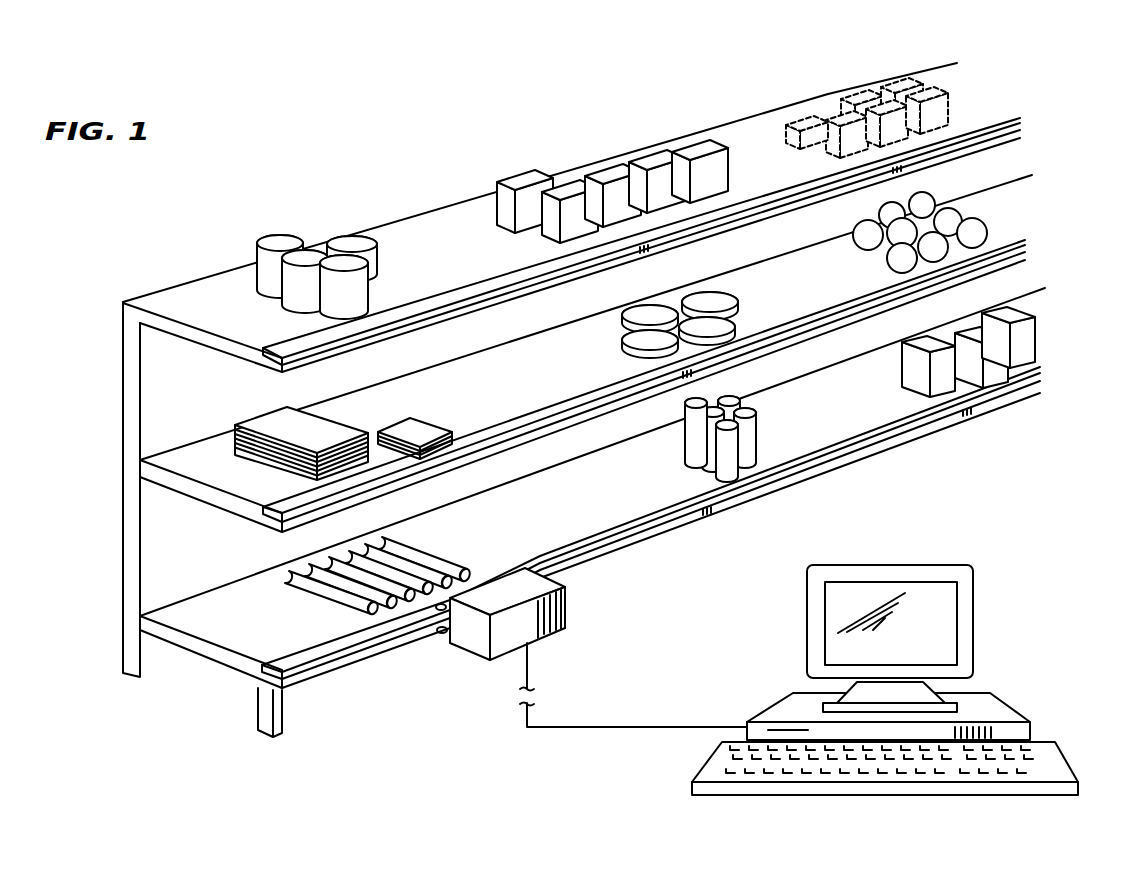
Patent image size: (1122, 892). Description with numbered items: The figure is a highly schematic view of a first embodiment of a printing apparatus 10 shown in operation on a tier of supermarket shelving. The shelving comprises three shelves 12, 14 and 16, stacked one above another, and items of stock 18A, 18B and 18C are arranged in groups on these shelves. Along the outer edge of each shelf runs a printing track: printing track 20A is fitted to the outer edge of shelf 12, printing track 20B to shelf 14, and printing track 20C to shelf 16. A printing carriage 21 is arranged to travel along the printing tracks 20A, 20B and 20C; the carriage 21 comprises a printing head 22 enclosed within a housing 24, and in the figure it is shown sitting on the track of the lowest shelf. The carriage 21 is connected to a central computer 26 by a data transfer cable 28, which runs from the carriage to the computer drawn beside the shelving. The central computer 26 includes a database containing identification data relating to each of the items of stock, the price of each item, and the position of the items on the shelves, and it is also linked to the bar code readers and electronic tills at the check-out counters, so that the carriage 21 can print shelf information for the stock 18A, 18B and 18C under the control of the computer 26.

The printing apparatus 10 is at (488, 700).
The shelf 12 is at (803, 393).
The shelf 14 is at (772, 278).
The shelf 16 is at (750, 148).
The items of stock 18A is at (313, 603).
The items of stock 18B is at (763, 448).
The items of stock 18C is at (995, 372).
The printing track 20A is at (307, 680).
The printing track 20B is at (507, 452).
The printing track 20C is at (452, 313).
The printing carriage 21 is at (572, 603).
The printing head 22 is at (492, 580).
The housing 24 is at (555, 637).
The central computer 26 is at (1002, 663).
The data transfer cable 28 is at (593, 730).